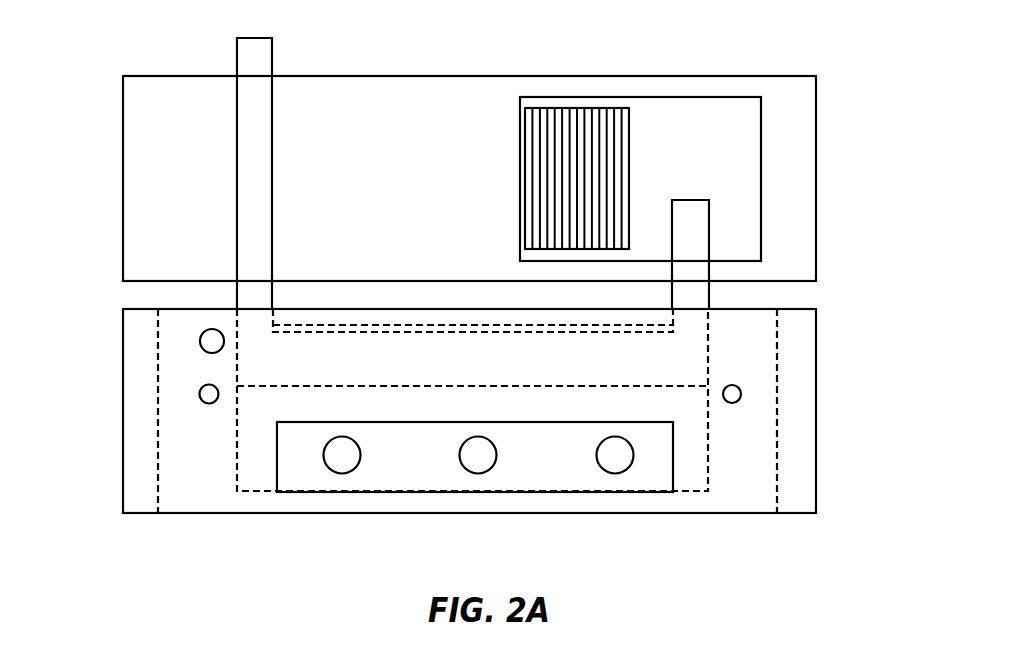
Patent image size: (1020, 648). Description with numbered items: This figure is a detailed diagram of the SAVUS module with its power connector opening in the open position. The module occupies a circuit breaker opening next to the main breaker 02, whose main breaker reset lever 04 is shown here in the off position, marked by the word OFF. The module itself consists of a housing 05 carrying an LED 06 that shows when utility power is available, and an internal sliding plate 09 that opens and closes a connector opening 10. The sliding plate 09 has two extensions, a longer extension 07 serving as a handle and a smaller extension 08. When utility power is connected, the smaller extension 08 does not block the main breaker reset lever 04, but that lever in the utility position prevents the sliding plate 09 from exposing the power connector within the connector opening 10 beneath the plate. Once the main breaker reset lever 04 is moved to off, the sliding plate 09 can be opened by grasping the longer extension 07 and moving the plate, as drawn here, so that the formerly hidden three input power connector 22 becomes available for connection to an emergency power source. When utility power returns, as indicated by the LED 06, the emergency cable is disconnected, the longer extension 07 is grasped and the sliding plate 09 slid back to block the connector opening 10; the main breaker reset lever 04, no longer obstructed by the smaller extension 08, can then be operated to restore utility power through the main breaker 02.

The main breaker 02 is at (467, 98).
The main breaker reset lever 04 is at (605, 174).
The housing 05 is at (123, 405).
The LED 06 is at (212, 341).
The longer extension 07 is at (249, 222).
The smaller extension 08 is at (698, 228).
The sliding plate 09 is at (253, 487).
The connector opening 10 is at (673, 463).
The three input power connector 22 is at (638, 473).